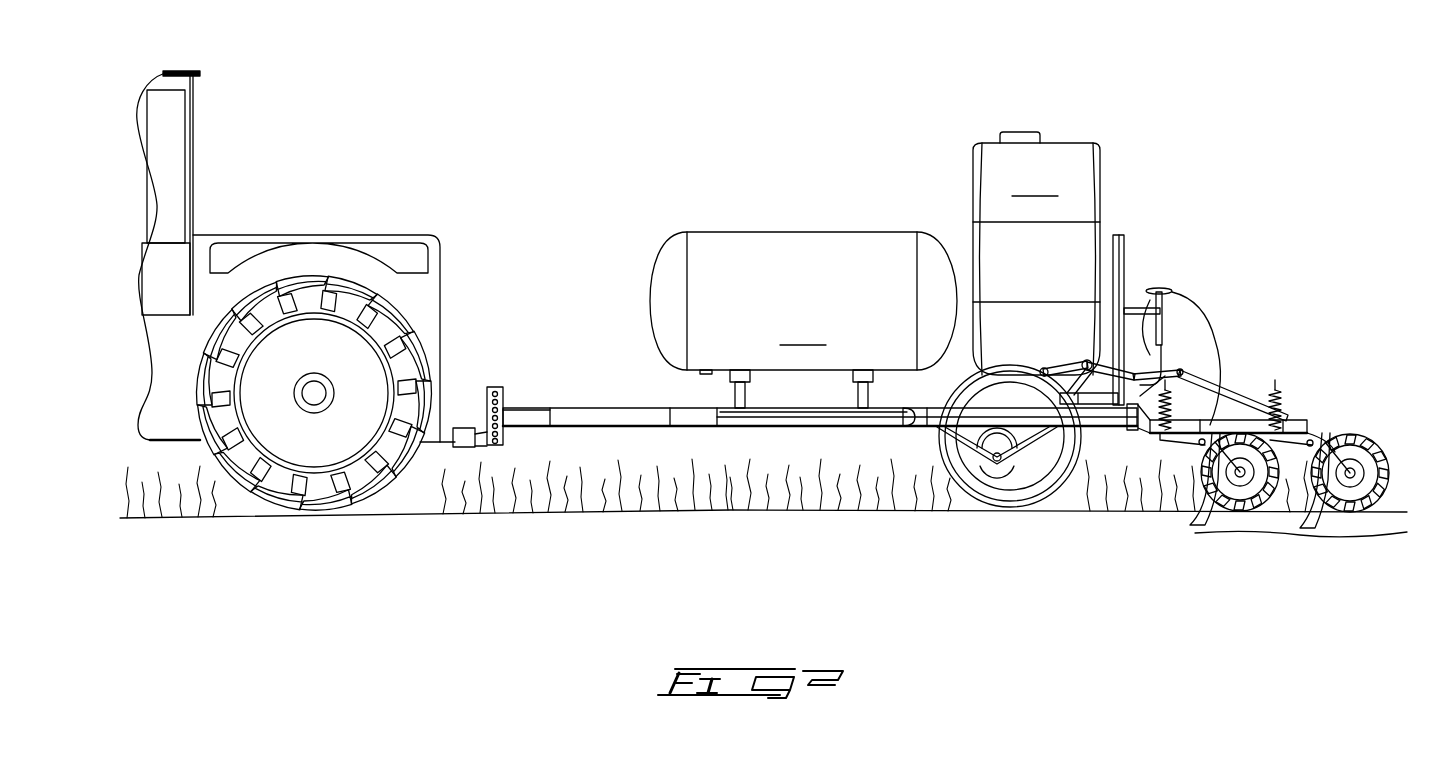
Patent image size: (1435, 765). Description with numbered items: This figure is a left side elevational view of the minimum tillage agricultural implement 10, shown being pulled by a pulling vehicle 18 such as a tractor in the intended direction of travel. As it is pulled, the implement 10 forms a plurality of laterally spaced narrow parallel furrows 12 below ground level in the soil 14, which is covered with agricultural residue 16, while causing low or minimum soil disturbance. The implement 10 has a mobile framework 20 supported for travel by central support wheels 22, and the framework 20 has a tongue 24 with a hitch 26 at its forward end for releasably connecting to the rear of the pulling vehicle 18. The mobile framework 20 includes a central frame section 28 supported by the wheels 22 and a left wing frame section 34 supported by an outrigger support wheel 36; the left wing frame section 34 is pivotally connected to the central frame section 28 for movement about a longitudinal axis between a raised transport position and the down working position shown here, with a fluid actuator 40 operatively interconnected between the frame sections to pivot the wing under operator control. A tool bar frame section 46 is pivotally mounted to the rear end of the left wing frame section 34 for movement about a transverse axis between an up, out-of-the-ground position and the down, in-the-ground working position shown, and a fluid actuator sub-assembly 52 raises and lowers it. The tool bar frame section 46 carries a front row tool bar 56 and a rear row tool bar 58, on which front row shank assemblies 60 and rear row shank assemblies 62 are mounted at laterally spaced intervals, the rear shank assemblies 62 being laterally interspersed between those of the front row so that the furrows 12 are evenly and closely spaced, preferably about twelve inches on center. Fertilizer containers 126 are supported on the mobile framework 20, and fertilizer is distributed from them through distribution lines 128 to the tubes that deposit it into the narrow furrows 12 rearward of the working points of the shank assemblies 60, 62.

The minimum tillage agricultural implement 10 is at (888, 112).
The furrows 12 is at (1270, 480).
The soil 14 is at (535, 540).
The agricultural residue 16 is at (768, 505).
The pulling vehicle 18 is at (414, 238).
The mobile framework 20 is at (820, 399).
The central support wheels 22 is at (1030, 471).
The tongue 24 is at (578, 404).
The hitch 26 is at (493, 385).
The central frame section 28 is at (695, 426).
The left wing frame section 34 is at (877, 426).
The outrigger support wheel 36 is at (998, 500).
The fluid actuator 40 is at (1130, 325).
The tool bar frame section 46 is at (1235, 395).
The fluid actuator sub-assembly 52 is at (1067, 357).
The front row tool bar 56 is at (1170, 440).
The rear row tool bar 58 is at (1333, 440).
The front row shank assemblies 60 is at (1243, 525).
The rear row shank assemblies 62 is at (1312, 545).
The fertilizer containers 126 is at (875, 270).
The distribution lines 128 is at (1227, 423).